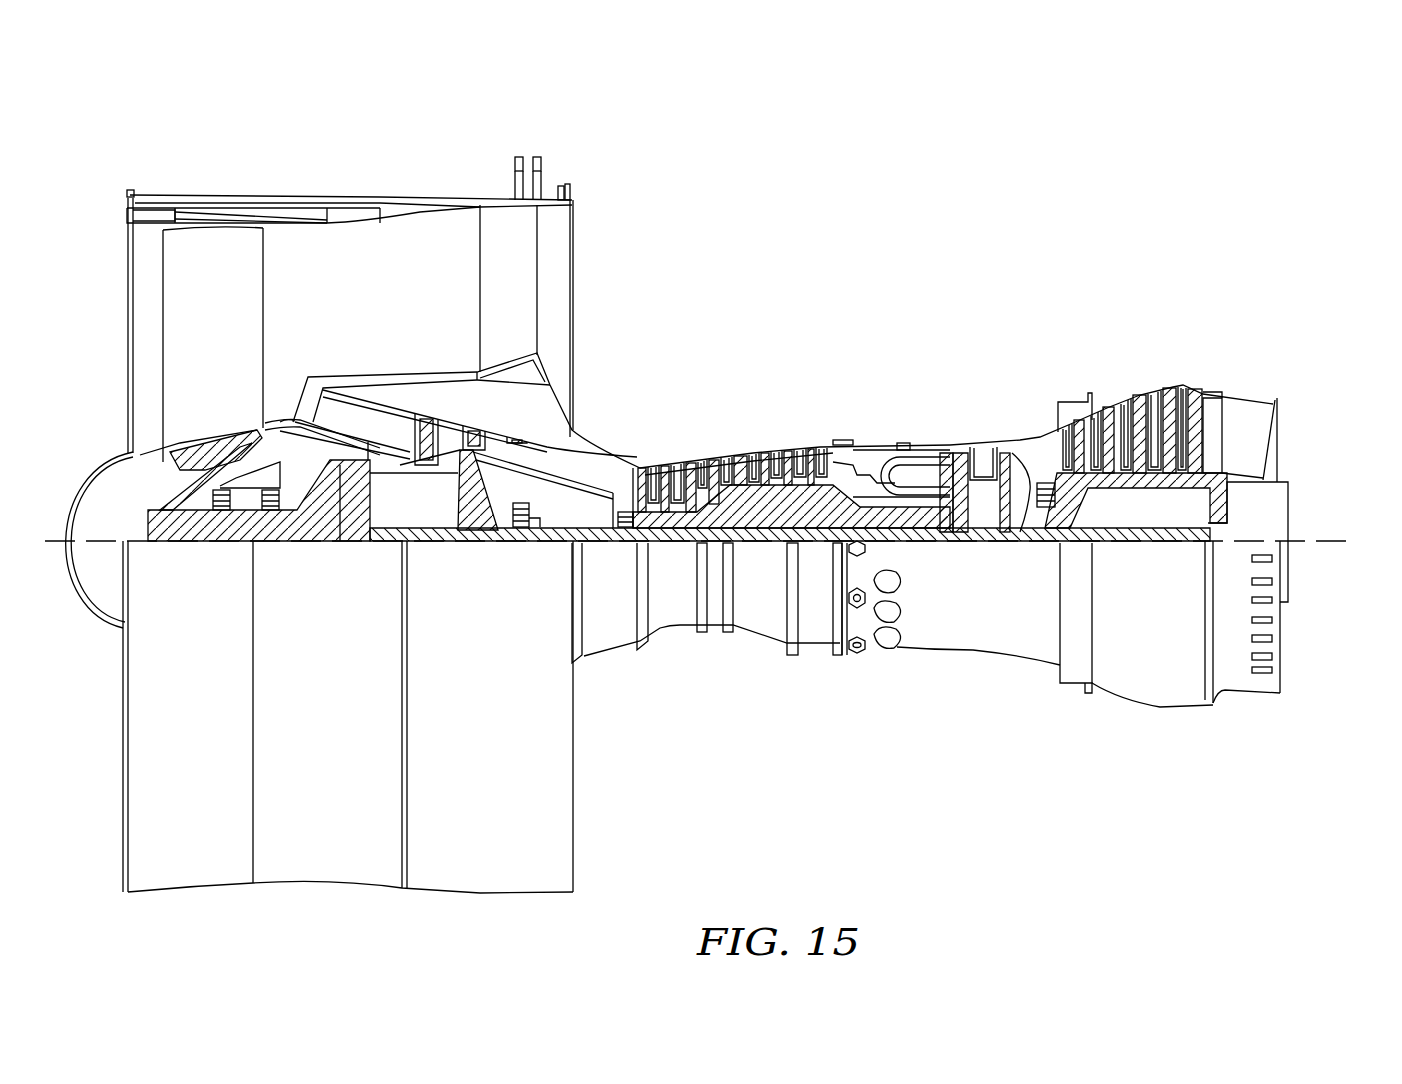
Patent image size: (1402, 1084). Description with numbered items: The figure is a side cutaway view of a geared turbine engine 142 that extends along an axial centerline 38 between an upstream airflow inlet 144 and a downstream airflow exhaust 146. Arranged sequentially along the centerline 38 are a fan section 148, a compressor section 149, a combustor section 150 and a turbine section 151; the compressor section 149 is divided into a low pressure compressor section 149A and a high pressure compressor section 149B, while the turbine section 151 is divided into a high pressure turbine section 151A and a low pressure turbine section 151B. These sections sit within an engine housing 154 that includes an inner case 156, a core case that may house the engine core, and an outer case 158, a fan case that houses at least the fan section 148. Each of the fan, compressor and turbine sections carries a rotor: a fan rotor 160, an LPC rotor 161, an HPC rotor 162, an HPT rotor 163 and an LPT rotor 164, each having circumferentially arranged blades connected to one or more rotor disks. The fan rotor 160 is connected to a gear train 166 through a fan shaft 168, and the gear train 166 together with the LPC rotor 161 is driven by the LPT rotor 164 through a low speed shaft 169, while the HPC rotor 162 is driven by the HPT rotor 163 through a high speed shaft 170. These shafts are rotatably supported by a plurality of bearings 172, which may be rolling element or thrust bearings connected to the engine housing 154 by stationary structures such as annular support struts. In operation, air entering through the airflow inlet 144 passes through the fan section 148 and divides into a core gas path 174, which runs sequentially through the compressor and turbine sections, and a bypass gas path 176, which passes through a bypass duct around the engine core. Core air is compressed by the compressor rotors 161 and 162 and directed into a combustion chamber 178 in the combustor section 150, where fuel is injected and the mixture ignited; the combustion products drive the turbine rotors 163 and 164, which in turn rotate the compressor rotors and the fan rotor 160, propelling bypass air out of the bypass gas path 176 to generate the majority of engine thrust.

The axial centerline 38 is at (1347, 545).
The geared turbine engine 142 is at (93, 182).
The airflow inlet 144 is at (128, 278).
The airflow exhaust 146 is at (1285, 420).
The fan section 148 is at (312, 175).
The compressor section 149 is at (815, 110).
The low pressure compressor (LPC) section 149A is at (575, 158).
The high pressure compressor (HPC) section 149B is at (812, 366).
The combustor section 150 is at (948, 366).
The turbine section 151 is at (1235, 294).
The high pressure turbine (HPT) section 151A is at (1035, 366).
The low pressure turbine (LPT) section 151B is at (1235, 366).
The engine housing 154 is at (601, 672).
The inner case 156 is at (813, 647).
The outer case 158 is at (525, 893).
The fan rotor 160 is at (137, 455).
The LPC rotor 161 is at (467, 487).
The HPC rotor 162 is at (753, 500).
The HPT rotor 163 is at (987, 547).
The LPT rotor 164 is at (1140, 478).
The gear train 166 is at (352, 547).
The fan shaft 168 is at (202, 548).
The low speed shaft 169 is at (1153, 543).
The high speed shaft 170 is at (918, 545).
The bearings 172 is at (245, 548).
The core gas path 174 is at (598, 462).
The bypass gas path 176 is at (404, 313).
The combustion chamber 178 is at (903, 468).